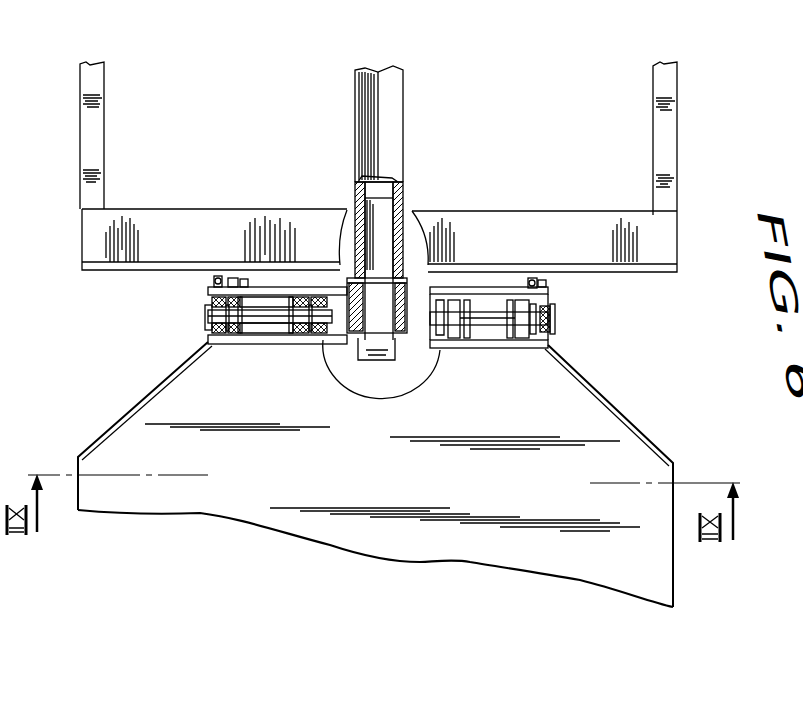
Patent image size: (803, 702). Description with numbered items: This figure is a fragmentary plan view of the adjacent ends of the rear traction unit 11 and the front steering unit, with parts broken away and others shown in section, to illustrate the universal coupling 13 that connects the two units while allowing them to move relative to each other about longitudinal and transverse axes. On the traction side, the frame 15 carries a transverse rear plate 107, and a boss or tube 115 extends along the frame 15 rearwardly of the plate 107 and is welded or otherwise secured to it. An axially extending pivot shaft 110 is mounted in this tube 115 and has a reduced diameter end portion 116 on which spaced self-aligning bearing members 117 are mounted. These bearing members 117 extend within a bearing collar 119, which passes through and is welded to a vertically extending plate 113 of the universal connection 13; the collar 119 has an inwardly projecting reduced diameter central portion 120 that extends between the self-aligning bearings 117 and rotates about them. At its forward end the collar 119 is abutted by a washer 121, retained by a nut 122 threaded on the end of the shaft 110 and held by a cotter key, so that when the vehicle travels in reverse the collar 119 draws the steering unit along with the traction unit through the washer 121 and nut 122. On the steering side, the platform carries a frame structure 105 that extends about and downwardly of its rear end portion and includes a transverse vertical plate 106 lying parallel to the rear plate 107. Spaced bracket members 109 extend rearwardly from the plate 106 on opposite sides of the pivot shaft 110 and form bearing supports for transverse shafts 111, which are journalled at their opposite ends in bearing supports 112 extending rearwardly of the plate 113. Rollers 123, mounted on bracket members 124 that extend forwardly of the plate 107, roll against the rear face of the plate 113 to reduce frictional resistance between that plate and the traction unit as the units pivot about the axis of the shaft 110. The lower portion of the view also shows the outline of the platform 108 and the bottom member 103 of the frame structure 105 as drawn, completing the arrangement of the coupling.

The rear traction unit 11 is at (76, 110).
The universal coupling 13 is at (196, 295).
The frame 15 is at (80, 187).
The bottom plate 103 is at (553, 346).
The frame structure 105 is at (127, 412).
The vertical plate 106 is at (243, 338).
The transverse rear plate 107 is at (82, 268).
The bottom wall 108 is at (253, 515).
The bracket members 109 is at (273, 338).
The pivot shaft 110 is at (385, 204).
The transverse shafts 111 is at (531, 342).
The bearing supports 112 is at (217, 340).
The vertically extending plate 113 is at (500, 287).
The boss or tube 115 is at (357, 262).
The reduced diameter end portion 116 is at (410, 343).
The self-aligning bearing members 117 is at (330, 268).
The bearing collar 119 is at (462, 300).
The reduced diameter central portion 120 is at (383, 269).
The washer 121 is at (360, 335).
The nut 122 is at (397, 357).
The rollers 123 is at (216, 280).
The bracket members 124 is at (244, 280).